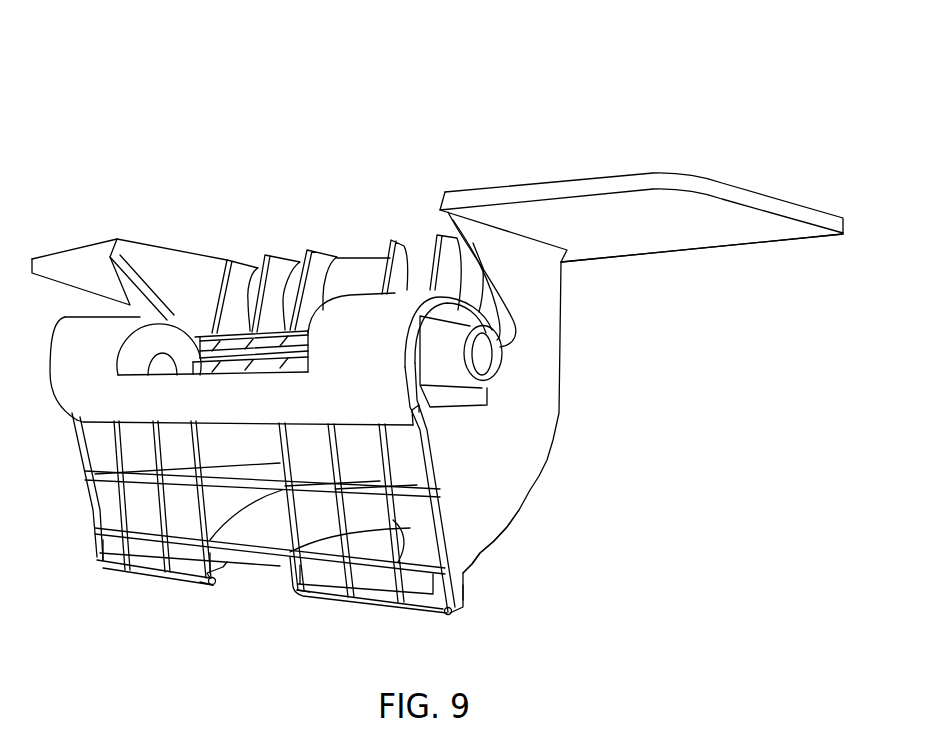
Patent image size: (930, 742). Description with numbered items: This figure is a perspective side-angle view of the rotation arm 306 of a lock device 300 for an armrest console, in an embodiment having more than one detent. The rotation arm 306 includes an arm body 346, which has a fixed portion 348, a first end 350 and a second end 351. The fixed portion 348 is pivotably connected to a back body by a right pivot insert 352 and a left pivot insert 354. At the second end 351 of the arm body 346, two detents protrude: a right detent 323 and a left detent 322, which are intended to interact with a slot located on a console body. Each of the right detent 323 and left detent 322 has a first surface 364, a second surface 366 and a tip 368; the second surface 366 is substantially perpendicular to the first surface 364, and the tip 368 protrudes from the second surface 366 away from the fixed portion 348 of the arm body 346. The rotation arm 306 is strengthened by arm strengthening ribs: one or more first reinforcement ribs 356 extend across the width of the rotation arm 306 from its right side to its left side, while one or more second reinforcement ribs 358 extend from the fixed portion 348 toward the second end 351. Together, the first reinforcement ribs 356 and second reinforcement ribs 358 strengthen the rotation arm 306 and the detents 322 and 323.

The lock device 300 is at (426, 46).
The rotation arm 306 is at (527, 190).
The left detent 322 is at (463, 592).
The right detent 323 is at (100, 565).
The arm body 346 is at (545, 298).
The fixed portion 348 is at (352, 320).
The first end 350 is at (736, 236).
The second end 351 is at (470, 553).
The right pivot insert 352 is at (155, 358).
The left pivot insert 354 is at (485, 368).
The first reinforcement ribs 356 is at (90, 476).
The second reinforcement ribs 358 is at (180, 523).
The first surface 364 is at (122, 563).
The second surface 366 is at (218, 580).
The tip 368 is at (207, 586).